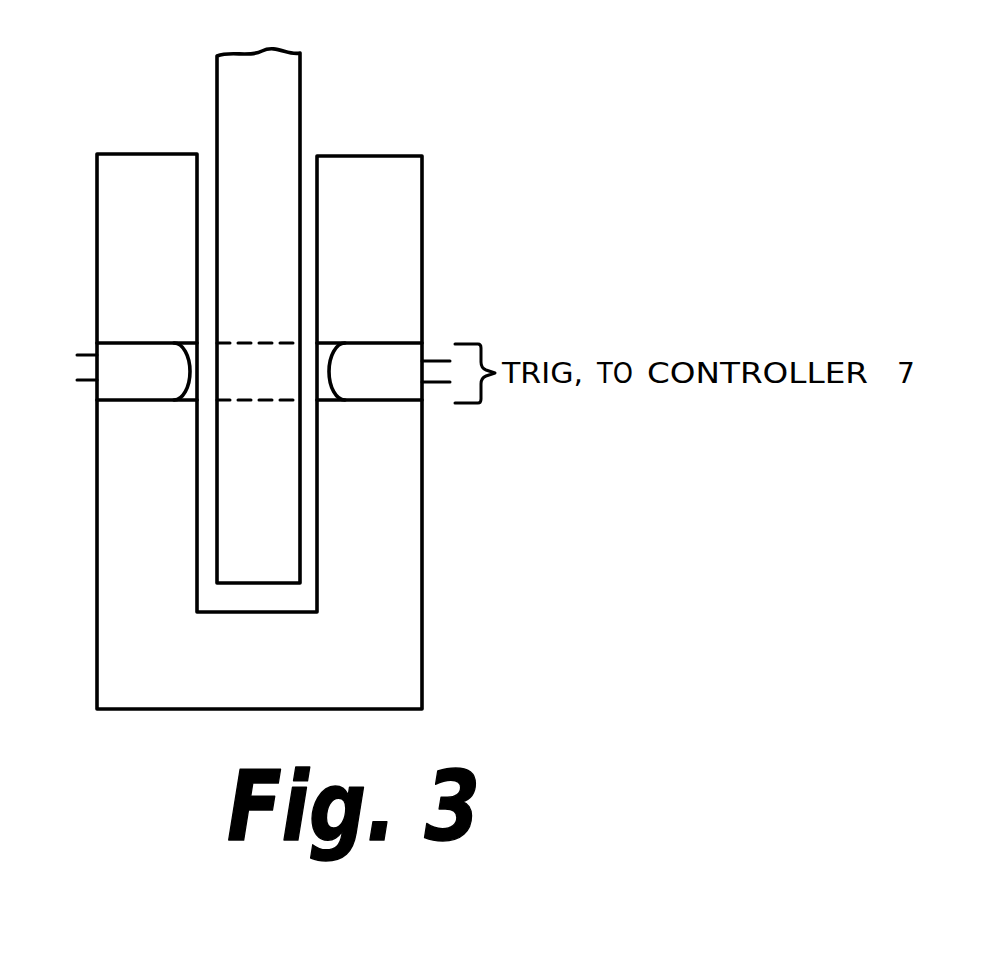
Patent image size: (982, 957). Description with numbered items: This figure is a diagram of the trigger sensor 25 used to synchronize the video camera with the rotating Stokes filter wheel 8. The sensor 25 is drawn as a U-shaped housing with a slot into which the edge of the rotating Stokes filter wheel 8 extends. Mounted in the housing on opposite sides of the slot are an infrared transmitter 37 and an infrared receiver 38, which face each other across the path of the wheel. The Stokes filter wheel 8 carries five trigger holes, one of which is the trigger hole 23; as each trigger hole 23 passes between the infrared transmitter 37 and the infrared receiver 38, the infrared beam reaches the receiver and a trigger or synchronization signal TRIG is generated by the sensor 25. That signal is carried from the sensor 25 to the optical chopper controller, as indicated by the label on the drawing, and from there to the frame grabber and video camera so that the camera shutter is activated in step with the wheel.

The rotating Stokes filter wheel 8 is at (300, 80).
The trigger hole 23 is at (259, 334).
The sensor 25 is at (421, 616).
The infrared transmitter 37 is at (130, 387).
The infrared receiver 38 is at (388, 398).